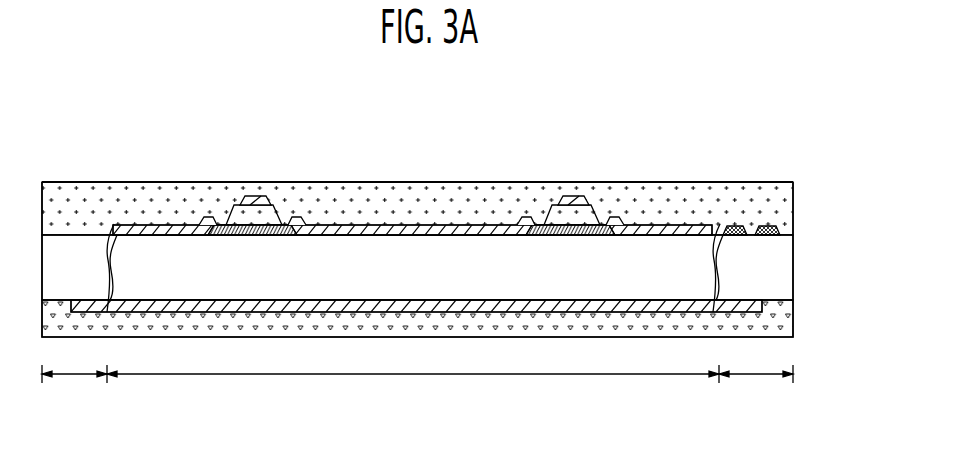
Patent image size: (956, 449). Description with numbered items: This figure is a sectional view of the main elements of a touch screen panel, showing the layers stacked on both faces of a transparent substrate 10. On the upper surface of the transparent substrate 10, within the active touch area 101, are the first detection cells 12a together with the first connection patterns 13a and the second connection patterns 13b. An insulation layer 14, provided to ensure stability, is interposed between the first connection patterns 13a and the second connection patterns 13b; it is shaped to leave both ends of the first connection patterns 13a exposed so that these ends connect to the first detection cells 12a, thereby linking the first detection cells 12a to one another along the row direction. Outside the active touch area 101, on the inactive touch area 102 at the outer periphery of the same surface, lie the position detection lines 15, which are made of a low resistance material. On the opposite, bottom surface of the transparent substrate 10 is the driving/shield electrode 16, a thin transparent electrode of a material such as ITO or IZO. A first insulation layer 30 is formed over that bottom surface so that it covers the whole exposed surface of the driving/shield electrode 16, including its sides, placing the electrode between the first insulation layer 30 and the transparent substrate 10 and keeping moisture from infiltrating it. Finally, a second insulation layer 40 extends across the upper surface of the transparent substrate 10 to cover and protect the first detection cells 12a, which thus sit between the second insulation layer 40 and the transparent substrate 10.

The transparent substrate 10 is at (789, 268).
The first detection cells 12a is at (148, 230).
The first connection patterns 13a is at (283, 225).
The second connection patterns 13b is at (257, 200).
The insulation layer 14 is at (230, 212).
The position detection lines 15 is at (786, 228).
The driving/shield electrode 16 is at (775, 310).
The first insulation layer 30 is at (787, 328).
The second insulation layer 40 is at (789, 190).
The active touch area 101 is at (413, 389).
The inactive touch area 102 is at (417, 386).